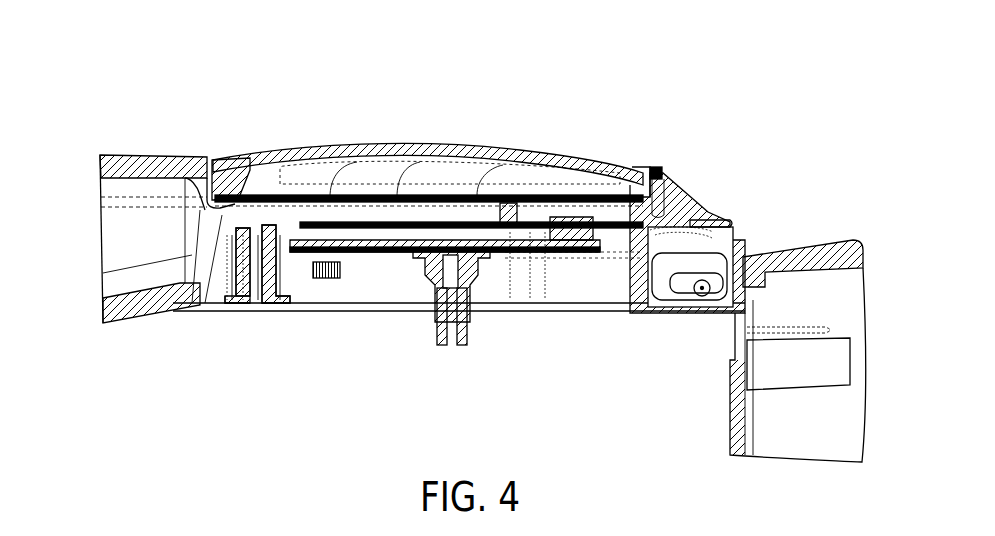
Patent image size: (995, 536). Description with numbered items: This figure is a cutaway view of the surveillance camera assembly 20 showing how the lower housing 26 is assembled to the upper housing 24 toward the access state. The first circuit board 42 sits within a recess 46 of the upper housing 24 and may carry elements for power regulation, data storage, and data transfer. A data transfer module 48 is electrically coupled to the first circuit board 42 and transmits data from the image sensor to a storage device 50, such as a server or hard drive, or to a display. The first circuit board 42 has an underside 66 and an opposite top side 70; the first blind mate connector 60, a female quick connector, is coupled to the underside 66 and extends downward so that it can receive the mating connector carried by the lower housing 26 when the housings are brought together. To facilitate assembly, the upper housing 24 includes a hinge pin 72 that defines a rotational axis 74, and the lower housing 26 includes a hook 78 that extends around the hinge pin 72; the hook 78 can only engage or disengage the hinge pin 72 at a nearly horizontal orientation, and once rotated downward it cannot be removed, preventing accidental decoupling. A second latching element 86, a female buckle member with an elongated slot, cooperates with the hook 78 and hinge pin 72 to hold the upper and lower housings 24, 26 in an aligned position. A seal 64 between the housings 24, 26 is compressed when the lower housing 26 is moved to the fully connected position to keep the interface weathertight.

The surveillance camera assembly 20 is at (600, 88).
The upper housing 24 is at (233, 157).
The lower housing 26 is at (843, 238).
The first circuit board 42 is at (547, 247).
The recess 46 is at (316, 310).
The data transfer module 48 is at (372, 195).
The storage device 50 is at (215, 228).
The first blind mate connector 60 is at (478, 332).
The seal 64 is at (180, 313).
The underside 66 is at (375, 240).
The top side 70 is at (402, 243).
The hinge pin 72 is at (700, 303).
The rotational axis 74 is at (704, 290).
The hook 78 is at (668, 303).
The second latching element 86 is at (253, 305).